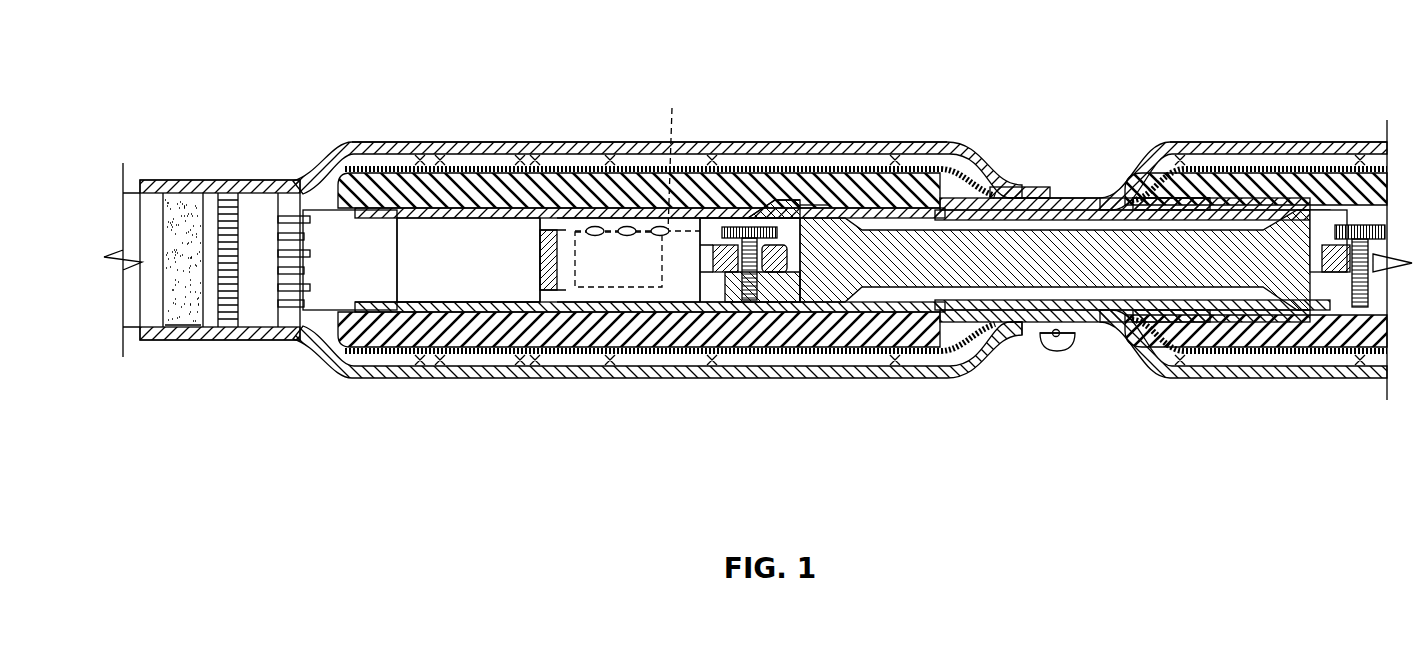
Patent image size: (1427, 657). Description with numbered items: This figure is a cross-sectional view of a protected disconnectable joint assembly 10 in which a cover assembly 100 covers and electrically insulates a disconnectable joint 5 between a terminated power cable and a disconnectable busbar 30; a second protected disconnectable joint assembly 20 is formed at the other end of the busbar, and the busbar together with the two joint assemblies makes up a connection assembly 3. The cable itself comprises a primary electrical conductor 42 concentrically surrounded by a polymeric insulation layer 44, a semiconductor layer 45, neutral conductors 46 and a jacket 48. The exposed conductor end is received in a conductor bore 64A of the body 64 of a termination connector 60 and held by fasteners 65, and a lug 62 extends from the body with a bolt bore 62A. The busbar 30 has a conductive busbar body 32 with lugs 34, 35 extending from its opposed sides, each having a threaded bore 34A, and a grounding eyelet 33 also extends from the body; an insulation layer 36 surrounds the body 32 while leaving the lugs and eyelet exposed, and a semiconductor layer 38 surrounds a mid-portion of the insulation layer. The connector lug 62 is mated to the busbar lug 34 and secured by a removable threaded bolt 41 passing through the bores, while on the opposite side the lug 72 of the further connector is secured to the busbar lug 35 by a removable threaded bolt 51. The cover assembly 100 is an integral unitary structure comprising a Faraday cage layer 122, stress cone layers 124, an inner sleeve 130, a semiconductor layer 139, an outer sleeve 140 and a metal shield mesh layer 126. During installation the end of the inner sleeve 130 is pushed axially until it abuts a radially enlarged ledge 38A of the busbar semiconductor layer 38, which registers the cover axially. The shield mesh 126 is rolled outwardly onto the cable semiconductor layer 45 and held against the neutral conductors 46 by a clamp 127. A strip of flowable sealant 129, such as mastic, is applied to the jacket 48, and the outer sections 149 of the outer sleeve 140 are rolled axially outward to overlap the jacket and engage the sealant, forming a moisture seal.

The connection assembly 3 is at (1043, 81).
The disconnectable joint 5 is at (797, 206).
The protected disconnectable joint assembly 10 is at (642, 48).
The second protected disconnectable joint assembly 20 is at (1309, 56).
The disconnectable busbar 30 is at (1062, 354).
The busbar body 32 is at (1090, 252).
The grounding eyelet 33 is at (1050, 345).
The busbar lug 34 is at (762, 272).
The threaded bore 34A is at (745, 302).
The busbar lug 35 is at (1362, 305).
The insulation layer 36 is at (1020, 192).
The semiconductor layer 38 is at (1067, 205).
The enlarged ledge 38A is at (985, 325).
The removable threaded bolt 41 is at (784, 194).
The primary electrical conductor 42 is at (571, 208).
The polymeric insulation layer 44 is at (468, 282).
The semiconductor layer 45 is at (325, 212).
The neutral conductors 46 is at (303, 228).
The jacket 48 is at (150, 205).
The removable threaded bolt 51 is at (1350, 228).
The termination connector 60 is at (555, 300).
The lug 62 is at (790, 262).
The bolt bore 62A is at (667, 302).
The body 64 is at (626, 296).
The conductor bore 64A is at (671, 155).
The fasteners 65 is at (620, 227).
The lug 72 is at (1290, 345).
The cover assembly 100 is at (754, 61).
The Faraday cage layer 122 is at (740, 208).
The stress cone layers 124 is at (435, 205).
The metal shield mesh layer 126 is at (527, 168).
The clamp 127 is at (243, 212).
The flowable sealant 129 is at (188, 318).
The inner sleeve 130 is at (478, 345).
The semiconductor layer 139 is at (487, 165).
The outer sleeve 140 is at (373, 148).
The outer sections 149 is at (190, 196).